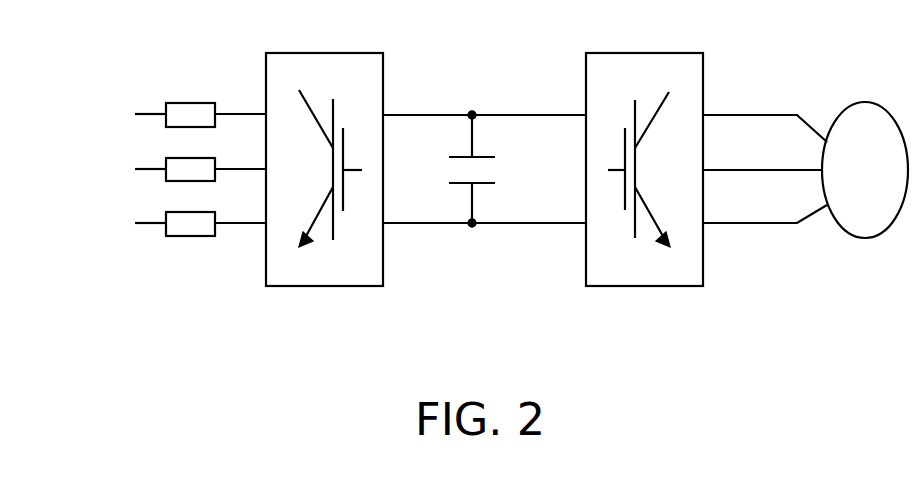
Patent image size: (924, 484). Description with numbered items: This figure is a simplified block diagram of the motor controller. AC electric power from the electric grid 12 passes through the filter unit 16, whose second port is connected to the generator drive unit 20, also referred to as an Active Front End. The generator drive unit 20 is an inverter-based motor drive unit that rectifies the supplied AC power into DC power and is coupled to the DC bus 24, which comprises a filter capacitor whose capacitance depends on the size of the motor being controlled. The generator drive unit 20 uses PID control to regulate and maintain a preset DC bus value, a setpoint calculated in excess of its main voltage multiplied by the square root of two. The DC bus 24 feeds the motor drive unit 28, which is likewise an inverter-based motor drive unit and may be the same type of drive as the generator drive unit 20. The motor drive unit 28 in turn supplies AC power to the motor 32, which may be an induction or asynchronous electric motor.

The electric grid 12 is at (45, 150).
The filter unit 16 is at (189, 102).
The generator drive unit 20 is at (322, 287).
The DC bus 24 is at (474, 226).
The motor drive unit 28 is at (703, 70).
The motor 32 is at (866, 238).